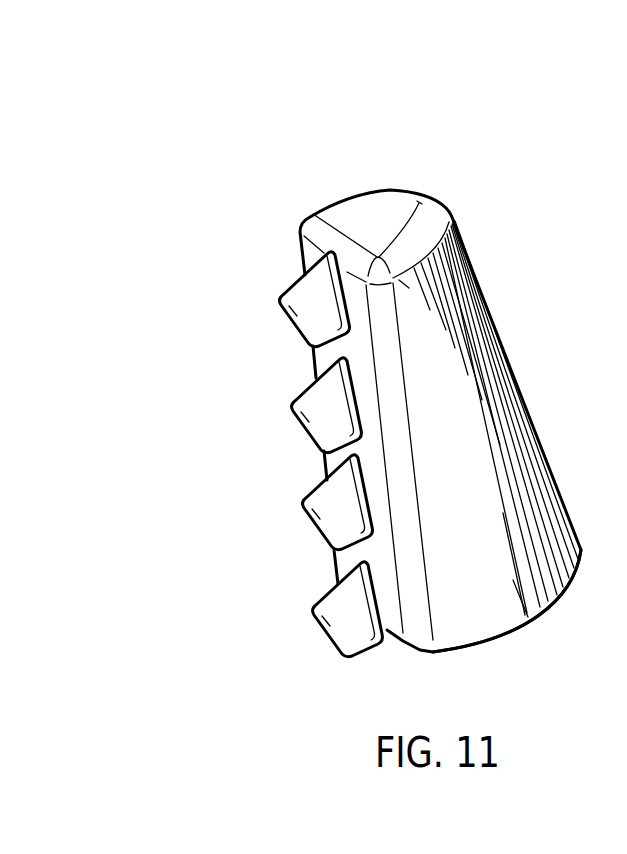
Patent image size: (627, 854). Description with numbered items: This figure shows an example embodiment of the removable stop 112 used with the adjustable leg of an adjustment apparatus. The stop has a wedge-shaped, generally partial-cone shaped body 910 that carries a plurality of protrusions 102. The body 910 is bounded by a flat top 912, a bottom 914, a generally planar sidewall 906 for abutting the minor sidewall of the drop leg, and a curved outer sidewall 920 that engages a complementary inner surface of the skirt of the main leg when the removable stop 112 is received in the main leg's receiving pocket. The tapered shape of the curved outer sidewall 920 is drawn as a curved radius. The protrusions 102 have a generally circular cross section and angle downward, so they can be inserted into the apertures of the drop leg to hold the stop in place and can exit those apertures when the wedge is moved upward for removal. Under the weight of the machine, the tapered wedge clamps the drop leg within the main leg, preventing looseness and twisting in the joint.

The removable stop 112 is at (506, 168).
The flat top 912 is at (353, 210).
The planar sidewall 906 is at (390, 573).
The body 910 is at (483, 610).
The curved outer sidewall 920 is at (500, 347).
The bottom 914 is at (453, 647).
The protrusions 102 is at (313, 607).